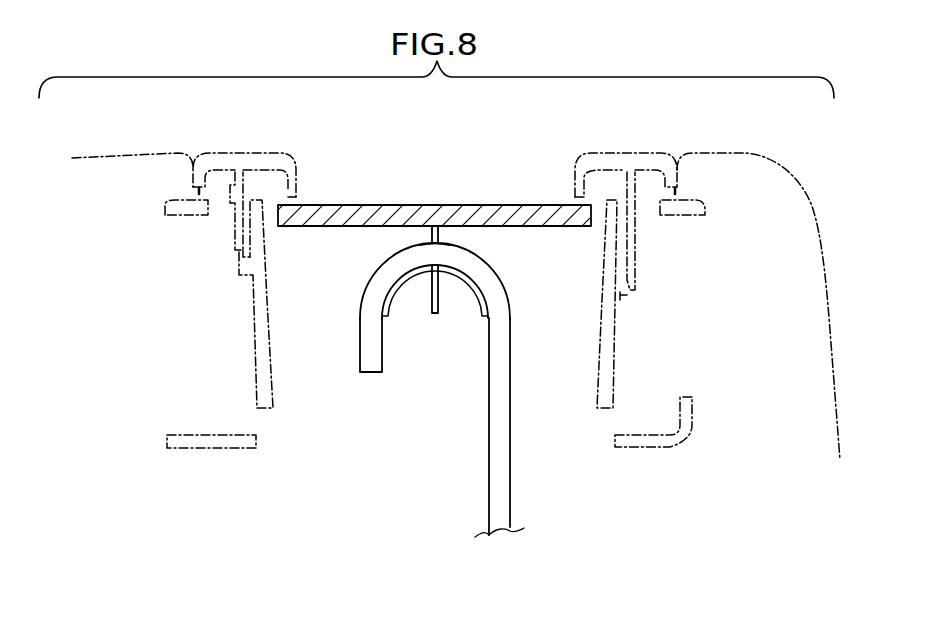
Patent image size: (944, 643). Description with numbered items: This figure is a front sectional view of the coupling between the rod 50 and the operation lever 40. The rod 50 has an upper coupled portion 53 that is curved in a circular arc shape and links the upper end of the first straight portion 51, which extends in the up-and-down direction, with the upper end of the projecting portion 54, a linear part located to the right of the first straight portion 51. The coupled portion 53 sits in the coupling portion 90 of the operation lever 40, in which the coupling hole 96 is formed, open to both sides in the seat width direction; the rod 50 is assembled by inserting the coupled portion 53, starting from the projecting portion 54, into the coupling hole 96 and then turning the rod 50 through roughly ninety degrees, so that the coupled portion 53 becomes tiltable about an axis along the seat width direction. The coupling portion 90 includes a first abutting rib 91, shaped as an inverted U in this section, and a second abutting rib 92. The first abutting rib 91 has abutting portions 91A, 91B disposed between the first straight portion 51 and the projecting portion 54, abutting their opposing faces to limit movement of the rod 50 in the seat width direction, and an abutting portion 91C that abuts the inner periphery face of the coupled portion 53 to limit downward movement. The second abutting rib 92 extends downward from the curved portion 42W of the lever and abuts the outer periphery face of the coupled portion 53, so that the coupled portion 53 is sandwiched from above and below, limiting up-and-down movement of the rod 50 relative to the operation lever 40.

The operation lever 40 is at (432, 217).
The curved portion 42W is at (489, 205).
The rod 50 is at (448, 419).
The first straight portion 51 is at (522, 422).
The coupled portion 53 is at (500, 263).
The projecting portion 54 is at (355, 307).
The coupling portion 90 is at (433, 353).
The first abutting rib 91 is at (457, 318).
The abutting portion 91A is at (480, 320).
The abutting portion 91B is at (395, 320).
The abutting portion 91C is at (441, 247).
The second abutting rib 92 is at (433, 233).
The coupling hole 96 is at (425, 241).